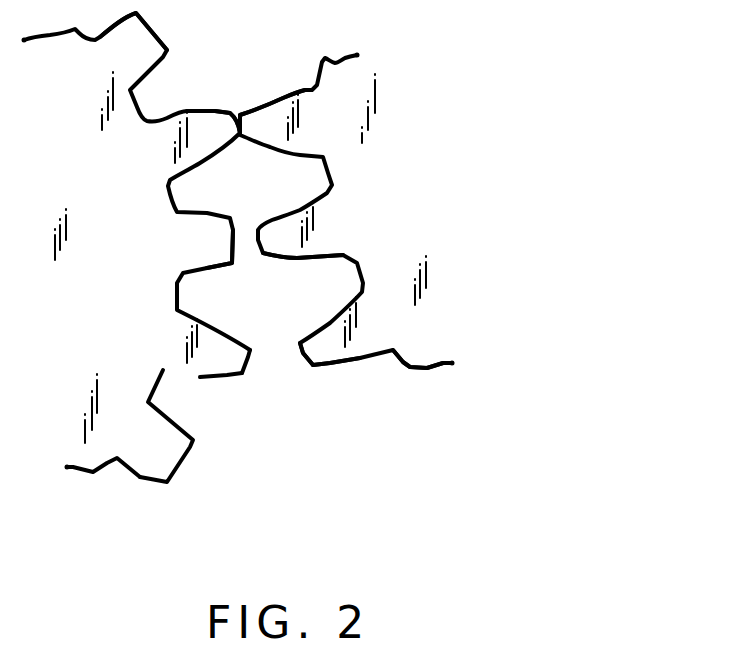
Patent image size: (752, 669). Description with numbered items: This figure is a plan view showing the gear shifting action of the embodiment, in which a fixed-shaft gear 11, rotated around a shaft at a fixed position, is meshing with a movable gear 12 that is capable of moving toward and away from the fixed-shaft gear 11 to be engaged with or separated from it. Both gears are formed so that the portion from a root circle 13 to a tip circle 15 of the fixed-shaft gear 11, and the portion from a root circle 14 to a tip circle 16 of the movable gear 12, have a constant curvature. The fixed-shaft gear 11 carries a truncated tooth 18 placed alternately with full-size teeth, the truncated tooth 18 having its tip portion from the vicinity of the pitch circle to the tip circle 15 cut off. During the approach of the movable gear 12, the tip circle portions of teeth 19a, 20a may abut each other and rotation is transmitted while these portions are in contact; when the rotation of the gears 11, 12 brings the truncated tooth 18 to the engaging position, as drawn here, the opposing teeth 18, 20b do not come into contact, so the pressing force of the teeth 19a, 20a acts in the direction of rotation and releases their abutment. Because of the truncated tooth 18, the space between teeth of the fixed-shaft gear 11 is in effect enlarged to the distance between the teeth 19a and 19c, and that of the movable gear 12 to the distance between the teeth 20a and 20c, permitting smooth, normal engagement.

The fixed-shaft gear 11 is at (160, 148).
The movable gear 12 is at (338, 132).
The root circle 13 is at (112, 470).
The root circle 14 is at (402, 362).
The tip circle 15 is at (180, 467).
The tip circle 16 is at (305, 355).
The truncated tooth 18 is at (138, 45).
The tooth portion 19a is at (200, 128).
The tooth 19c is at (228, 363).
The tooth portion 20a is at (273, 123).
The tooth 20b is at (287, 237).
The tooth 20c is at (330, 352).